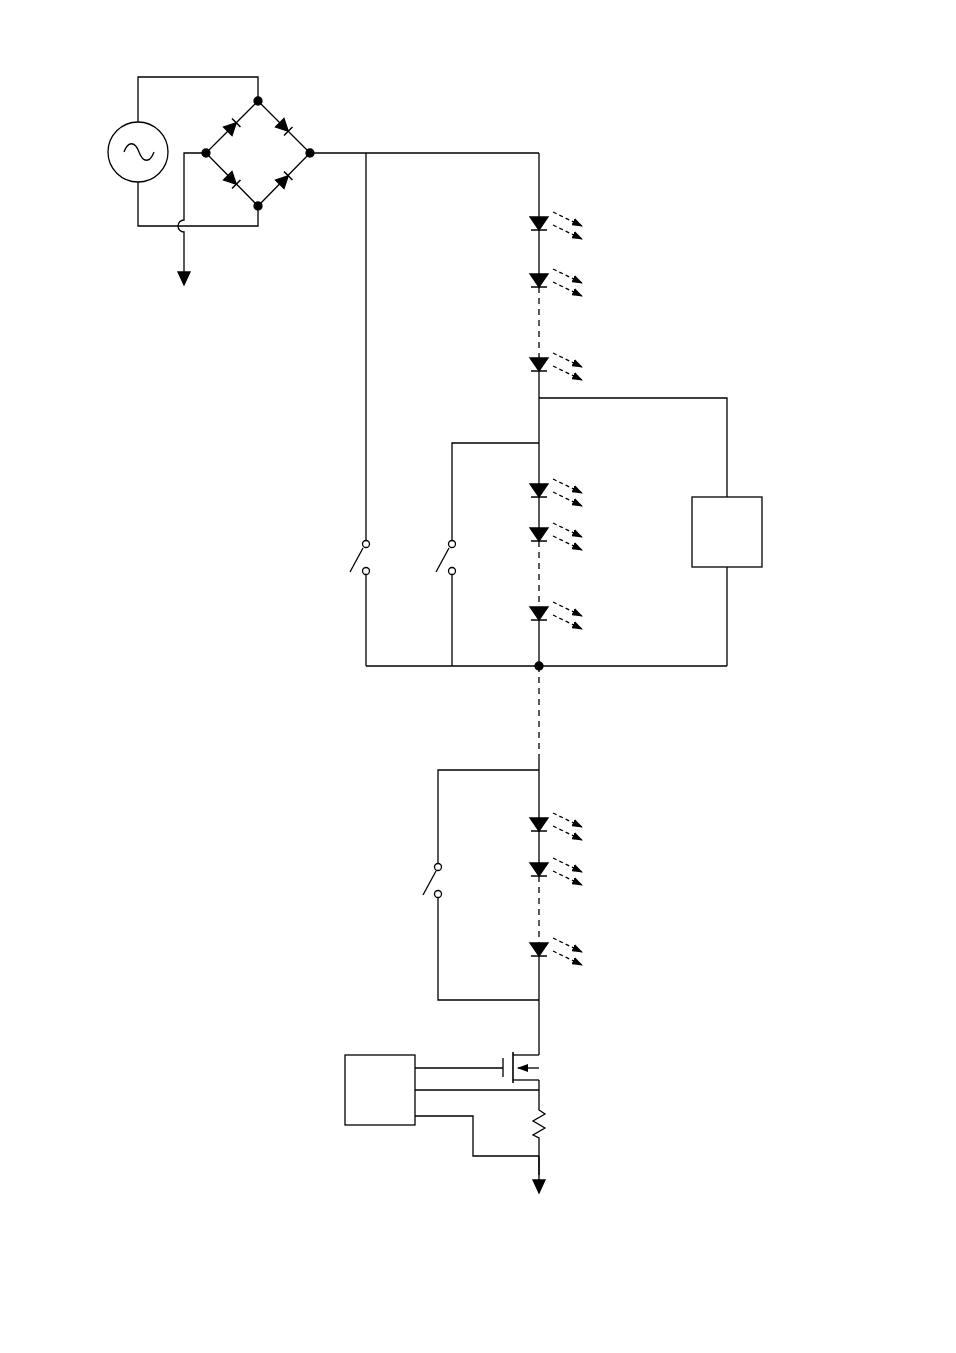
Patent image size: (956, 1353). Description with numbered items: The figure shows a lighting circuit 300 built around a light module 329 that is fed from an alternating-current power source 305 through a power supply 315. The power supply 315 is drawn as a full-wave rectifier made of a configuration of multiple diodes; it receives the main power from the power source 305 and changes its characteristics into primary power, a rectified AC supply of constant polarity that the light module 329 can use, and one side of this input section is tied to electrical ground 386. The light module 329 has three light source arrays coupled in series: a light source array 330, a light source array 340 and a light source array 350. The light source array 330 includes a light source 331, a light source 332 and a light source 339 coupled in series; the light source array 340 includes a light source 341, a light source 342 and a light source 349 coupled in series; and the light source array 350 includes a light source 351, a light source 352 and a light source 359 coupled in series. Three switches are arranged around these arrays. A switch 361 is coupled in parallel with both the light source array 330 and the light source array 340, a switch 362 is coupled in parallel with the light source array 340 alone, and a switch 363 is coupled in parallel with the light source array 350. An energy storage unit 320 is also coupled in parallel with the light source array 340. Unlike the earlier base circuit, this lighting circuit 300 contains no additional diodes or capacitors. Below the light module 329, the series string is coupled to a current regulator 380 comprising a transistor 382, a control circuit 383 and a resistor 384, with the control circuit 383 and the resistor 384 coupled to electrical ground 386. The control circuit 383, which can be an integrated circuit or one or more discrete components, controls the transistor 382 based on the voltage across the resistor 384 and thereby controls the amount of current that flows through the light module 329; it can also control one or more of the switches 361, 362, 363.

The lighting circuit 300 is at (733, 44).
The power source 305 is at (118, 132).
The power supply 315 is at (301, 97).
The energy storage unit 320 is at (711, 543).
The light module 329 is at (589, 131).
The light source array 330 is at (561, 197).
The light source 331 is at (536, 217).
The light source 332 is at (536, 275).
The light source 339 is at (536, 359).
The light source array 340 is at (561, 459).
The light source 341 is at (536, 485).
The light source 342 is at (536, 529).
The light source 349 is at (536, 608).
The light source array 350 is at (561, 800).
The light source 351 is at (536, 819).
The light source 352 is at (536, 864).
The light source 359 is at (536, 944).
The switch 361 is at (357, 563).
The switch 362 is at (444, 563).
The switch 363 is at (429, 885).
The current regulator 380 is at (295, 1034).
The transistor 382 is at (546, 1068).
The control circuit 383 is at (364, 1101).
The resistor 384 is at (546, 1124).
The electrical ground 386 is at (186, 280).